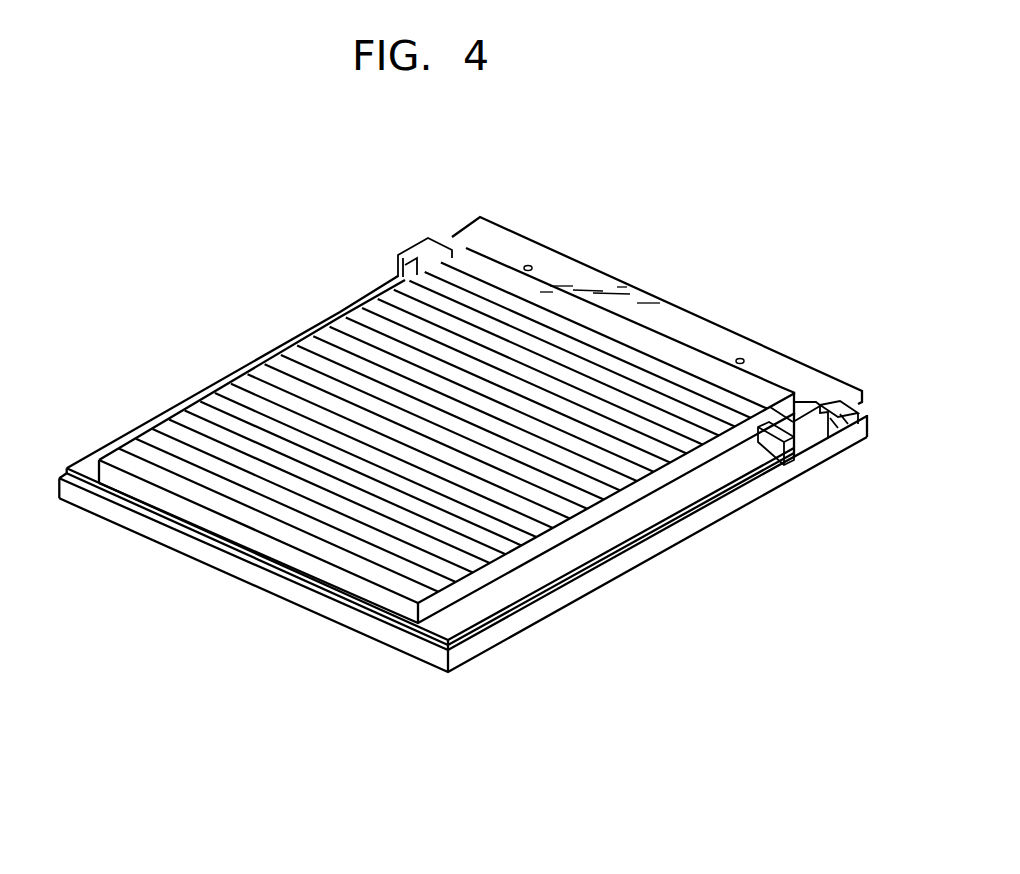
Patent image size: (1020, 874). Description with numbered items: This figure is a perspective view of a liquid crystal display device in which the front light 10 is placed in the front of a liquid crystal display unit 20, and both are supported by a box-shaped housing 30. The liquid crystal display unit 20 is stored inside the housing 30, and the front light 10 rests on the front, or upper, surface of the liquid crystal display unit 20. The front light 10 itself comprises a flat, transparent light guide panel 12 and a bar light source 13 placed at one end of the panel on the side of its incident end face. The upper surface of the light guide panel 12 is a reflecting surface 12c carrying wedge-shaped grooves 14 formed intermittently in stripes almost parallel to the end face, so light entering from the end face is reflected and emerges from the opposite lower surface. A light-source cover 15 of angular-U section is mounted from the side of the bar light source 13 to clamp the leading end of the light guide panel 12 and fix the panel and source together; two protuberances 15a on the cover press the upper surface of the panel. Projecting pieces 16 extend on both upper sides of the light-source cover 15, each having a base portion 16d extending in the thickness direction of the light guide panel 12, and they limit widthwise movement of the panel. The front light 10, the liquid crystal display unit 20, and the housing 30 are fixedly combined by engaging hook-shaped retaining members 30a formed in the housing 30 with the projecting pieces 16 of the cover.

The front light 10 is at (283, 393).
The light guide panel 12 is at (383, 603).
The reflecting surface 12c is at (350, 340).
The bar light source 13 is at (862, 398).
The wedge-shaped grooves 14 is at (201, 447).
The light-source cover 15 is at (670, 320).
The protuberances 15a is at (529, 266).
The projecting pieces 16 is at (765, 435).
The base portions 16d is at (441, 250).
The liquid crystal display unit 20 is at (583, 552).
The housing 30 is at (560, 604).
The hook-shaped retaining members 30a is at (422, 252).